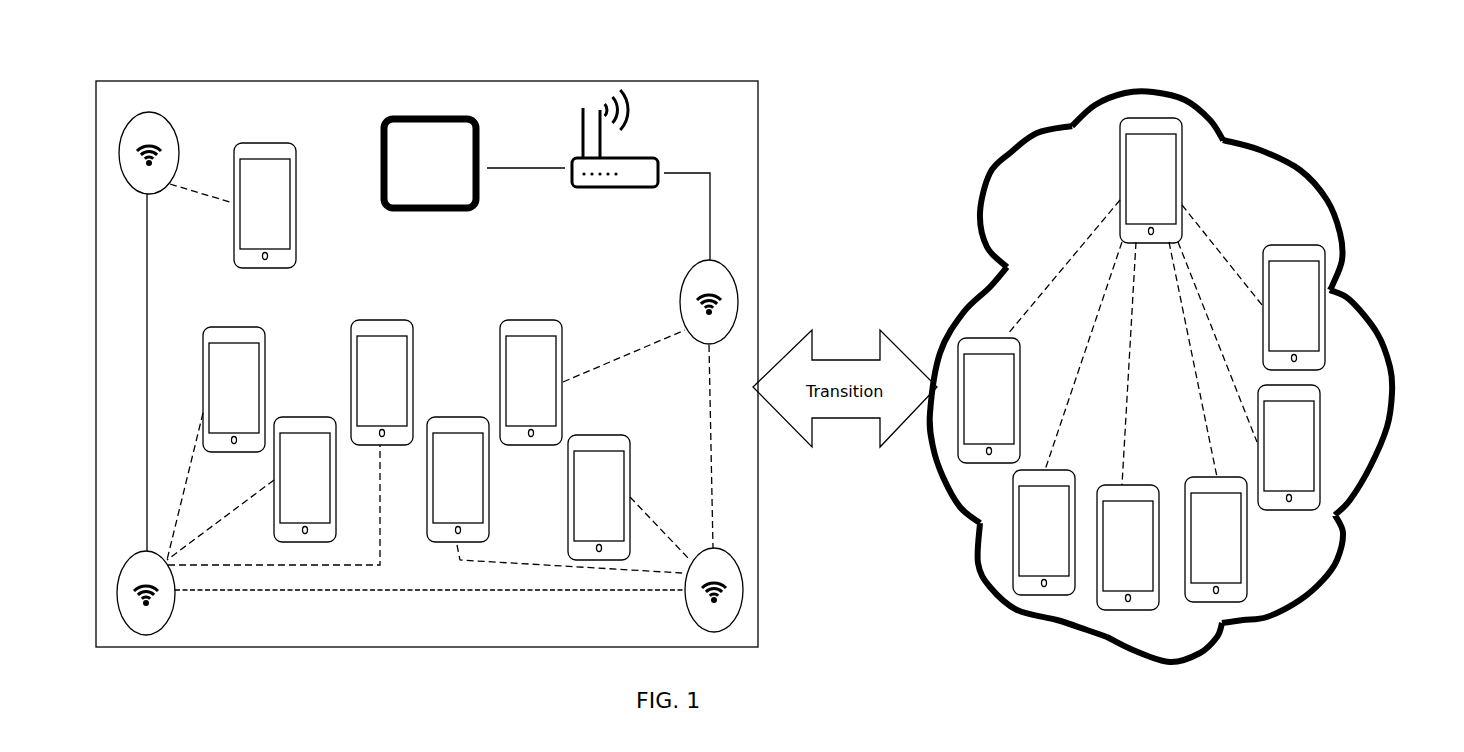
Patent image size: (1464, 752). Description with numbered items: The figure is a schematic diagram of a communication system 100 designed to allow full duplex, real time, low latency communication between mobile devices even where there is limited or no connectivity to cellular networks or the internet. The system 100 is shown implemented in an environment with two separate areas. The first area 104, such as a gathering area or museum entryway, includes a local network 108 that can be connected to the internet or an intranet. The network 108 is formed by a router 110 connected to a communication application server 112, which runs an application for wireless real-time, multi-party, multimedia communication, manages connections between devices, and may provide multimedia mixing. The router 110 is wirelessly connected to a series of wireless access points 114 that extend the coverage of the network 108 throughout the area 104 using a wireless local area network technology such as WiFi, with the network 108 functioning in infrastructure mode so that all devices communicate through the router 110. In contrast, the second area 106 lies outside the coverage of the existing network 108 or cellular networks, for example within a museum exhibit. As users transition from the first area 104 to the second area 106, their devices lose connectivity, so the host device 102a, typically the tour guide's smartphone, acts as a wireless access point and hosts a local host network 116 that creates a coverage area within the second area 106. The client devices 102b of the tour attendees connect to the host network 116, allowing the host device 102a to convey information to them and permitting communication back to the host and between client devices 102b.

The communication system 100 is at (143, 73).
The host device 102a is at (297, 238).
The client devices 102b is at (225, 332).
The first area 104 is at (403, 80).
The second area 106 is at (1010, 152).
The local network 108 is at (710, 225).
The router 110 is at (650, 158).
The communication application server 112 is at (477, 127).
The wireless access points 114 is at (145, 197).
The host network 116 is at (1070, 260).